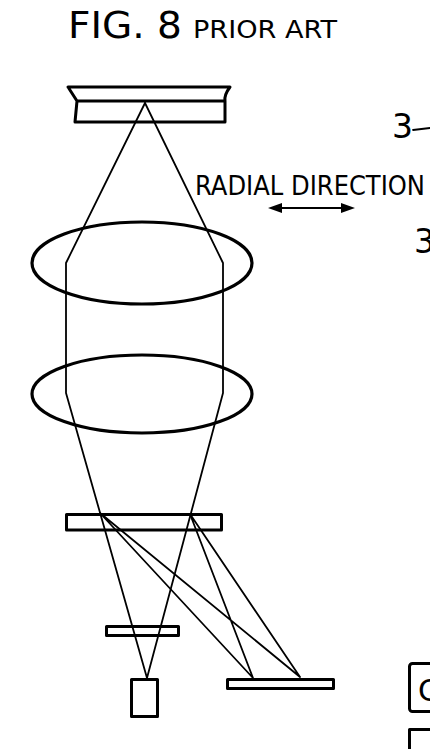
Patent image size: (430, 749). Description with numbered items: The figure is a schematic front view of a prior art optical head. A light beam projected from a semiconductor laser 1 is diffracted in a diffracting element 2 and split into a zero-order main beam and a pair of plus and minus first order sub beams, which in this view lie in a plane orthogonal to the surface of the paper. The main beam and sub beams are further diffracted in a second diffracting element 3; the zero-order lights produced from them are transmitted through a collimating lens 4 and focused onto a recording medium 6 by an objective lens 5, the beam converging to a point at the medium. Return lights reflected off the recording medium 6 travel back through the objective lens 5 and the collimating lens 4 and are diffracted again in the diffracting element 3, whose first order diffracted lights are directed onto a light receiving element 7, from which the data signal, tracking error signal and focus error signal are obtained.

The semiconductor laser 1 is at (137, 695).
The diffracting element 2 is at (107, 632).
The diffracting element 3 is at (85, 523).
The collimating lens 4 is at (62, 410).
The objective lens 5 is at (58, 273).
The recording medium 6 is at (83, 112).
The light receiving element 7 is at (286, 687).